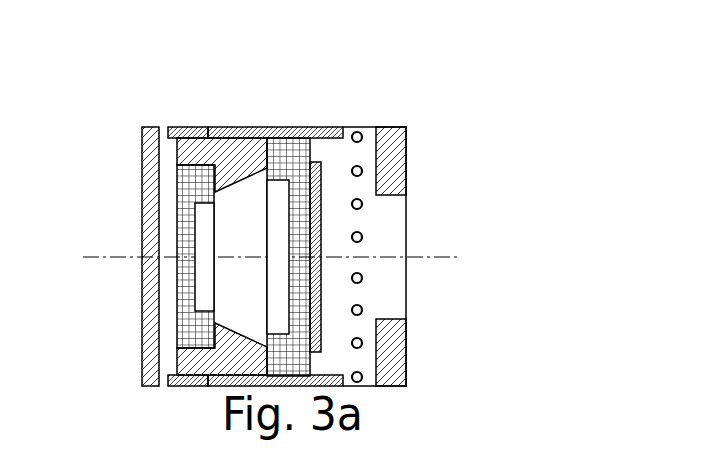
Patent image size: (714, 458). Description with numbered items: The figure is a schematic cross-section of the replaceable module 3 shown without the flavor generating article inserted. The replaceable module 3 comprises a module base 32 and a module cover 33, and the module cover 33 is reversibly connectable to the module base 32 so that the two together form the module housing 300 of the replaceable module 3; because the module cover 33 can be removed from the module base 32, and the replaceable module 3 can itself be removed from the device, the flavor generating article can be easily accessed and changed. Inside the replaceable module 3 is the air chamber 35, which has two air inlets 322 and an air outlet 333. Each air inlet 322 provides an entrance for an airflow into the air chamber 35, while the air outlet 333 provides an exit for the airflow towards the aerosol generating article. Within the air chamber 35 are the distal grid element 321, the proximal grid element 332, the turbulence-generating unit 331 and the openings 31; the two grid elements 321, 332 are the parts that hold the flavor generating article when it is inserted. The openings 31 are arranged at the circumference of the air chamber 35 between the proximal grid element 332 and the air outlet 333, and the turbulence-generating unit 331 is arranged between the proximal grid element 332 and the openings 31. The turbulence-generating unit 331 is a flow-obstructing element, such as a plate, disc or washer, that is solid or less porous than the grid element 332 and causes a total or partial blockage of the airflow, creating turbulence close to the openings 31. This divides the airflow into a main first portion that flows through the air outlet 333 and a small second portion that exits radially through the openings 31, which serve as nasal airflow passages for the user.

The replaceable module 3 is at (284, 193).
The module housing 300 is at (145, 37).
The openings 31 is at (357, 131).
The module base 32 is at (198, 128).
The module cover 33 is at (242, 128).
The air chamber 35 is at (337, 155).
The distal grid element 321 is at (182, 233).
The air inlets 322 is at (160, 128).
The turbulence-generating unit 331 is at (313, 272).
The proximal grid element 332 is at (302, 295).
The air outlet 333 is at (390, 215).